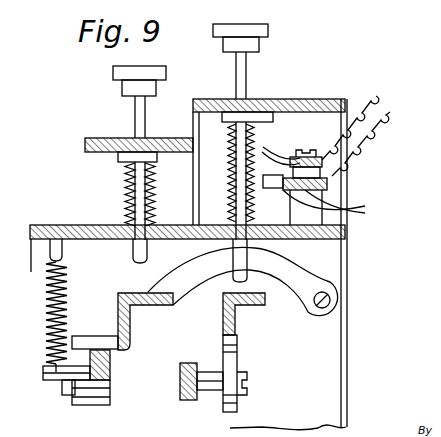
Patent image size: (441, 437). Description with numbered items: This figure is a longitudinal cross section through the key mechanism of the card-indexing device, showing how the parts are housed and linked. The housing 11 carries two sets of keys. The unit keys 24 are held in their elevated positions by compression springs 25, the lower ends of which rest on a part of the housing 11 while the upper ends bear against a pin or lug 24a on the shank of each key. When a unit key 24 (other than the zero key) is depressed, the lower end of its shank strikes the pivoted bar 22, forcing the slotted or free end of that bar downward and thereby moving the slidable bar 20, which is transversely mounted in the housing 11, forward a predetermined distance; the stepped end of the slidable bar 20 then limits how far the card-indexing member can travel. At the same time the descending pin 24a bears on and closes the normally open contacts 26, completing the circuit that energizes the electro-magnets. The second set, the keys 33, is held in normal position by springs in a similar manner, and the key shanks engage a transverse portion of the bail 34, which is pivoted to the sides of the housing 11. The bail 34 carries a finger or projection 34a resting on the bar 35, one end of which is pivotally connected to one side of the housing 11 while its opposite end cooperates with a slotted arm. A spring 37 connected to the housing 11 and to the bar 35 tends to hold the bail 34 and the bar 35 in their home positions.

The housing 11 is at (335, 256).
The slidable bar 20 is at (185, 400).
The pivoted bar 22 is at (237, 328).
The unit keys 24 is at (268, 31).
The pin or lug 24a is at (270, 114).
The compression springs 25 is at (250, 150).
The contacts 26 is at (336, 160).
The keys 33 is at (113, 76).
The bail 34 is at (181, 281).
The finger or projection 34a is at (93, 336).
The bar 35 is at (112, 366).
The spring 37 is at (48, 306).